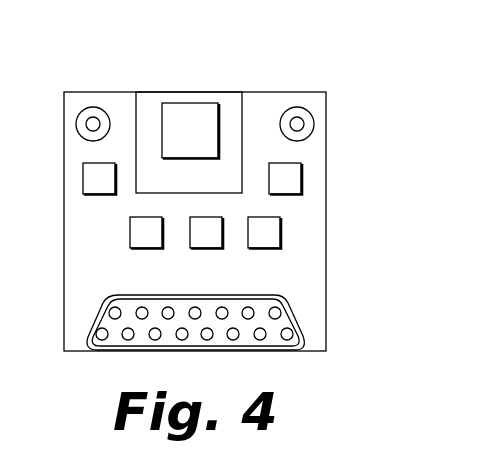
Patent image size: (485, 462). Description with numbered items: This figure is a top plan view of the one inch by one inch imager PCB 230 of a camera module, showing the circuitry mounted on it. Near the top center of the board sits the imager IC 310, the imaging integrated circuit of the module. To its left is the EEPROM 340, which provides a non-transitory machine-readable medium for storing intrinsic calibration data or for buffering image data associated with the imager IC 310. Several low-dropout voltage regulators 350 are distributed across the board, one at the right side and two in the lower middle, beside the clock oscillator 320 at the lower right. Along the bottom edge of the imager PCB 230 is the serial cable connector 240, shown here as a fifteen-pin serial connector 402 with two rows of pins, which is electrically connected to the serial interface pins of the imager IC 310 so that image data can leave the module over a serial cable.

The imager PCB 230 is at (311, 97).
The imager IC 310 is at (190, 103).
The EEPROM 340 is at (83, 177).
The low-dropout (LDO) voltage regulators 350 is at (302, 181).
The clock oscillator 320 is at (281, 232).
The serial cable connector 240 is at (295, 312).
The 15-pin serial connector 402 is at (251, 321).